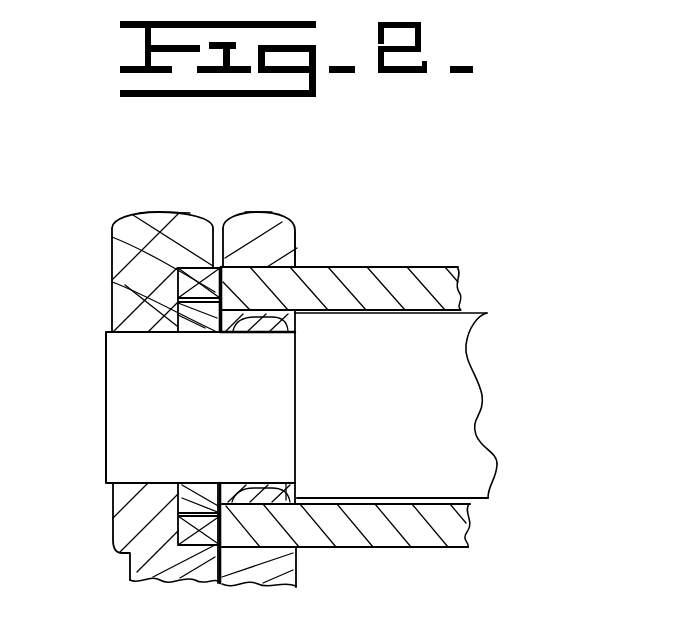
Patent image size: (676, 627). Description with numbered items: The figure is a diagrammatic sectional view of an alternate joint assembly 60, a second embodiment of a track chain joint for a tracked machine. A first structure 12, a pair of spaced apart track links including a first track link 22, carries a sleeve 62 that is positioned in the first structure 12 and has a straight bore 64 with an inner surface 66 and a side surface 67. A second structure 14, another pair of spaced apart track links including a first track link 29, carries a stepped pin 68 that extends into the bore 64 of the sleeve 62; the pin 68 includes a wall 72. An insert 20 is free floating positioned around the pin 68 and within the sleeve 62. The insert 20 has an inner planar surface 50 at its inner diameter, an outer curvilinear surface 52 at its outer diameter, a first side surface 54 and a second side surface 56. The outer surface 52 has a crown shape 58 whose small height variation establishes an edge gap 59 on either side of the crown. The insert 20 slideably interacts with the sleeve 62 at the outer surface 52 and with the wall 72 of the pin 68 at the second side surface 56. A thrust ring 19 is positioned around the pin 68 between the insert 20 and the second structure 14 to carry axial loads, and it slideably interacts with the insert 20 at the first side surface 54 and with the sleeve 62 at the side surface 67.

The first structure 12 is at (242, 197).
The second structure 14 is at (114, 200).
The thrust ring 19 is at (182, 333).
The insert 20 is at (285, 483).
The first track link 22 is at (272, 212).
The first track link 29 is at (167, 212).
The inner planar surface 50 is at (233, 334).
The outer curvilinear surface 52 is at (283, 312).
The first side surface 54 is at (210, 333).
The second side surface 56 is at (297, 326).
The crown shape 58 is at (264, 515).
The edge gap 59 is at (223, 500).
The alternate joint assembly 60 is at (349, 189).
The sleeve 62 is at (390, 278).
The straight bore 64 is at (477, 312).
The inner surface 66 is at (112, 282).
The side surface 67 is at (112, 237).
The stepped pin 68 is at (383, 405).
The wall 72 is at (296, 370).